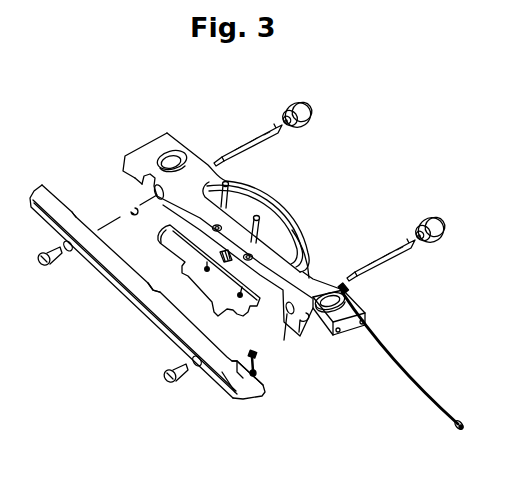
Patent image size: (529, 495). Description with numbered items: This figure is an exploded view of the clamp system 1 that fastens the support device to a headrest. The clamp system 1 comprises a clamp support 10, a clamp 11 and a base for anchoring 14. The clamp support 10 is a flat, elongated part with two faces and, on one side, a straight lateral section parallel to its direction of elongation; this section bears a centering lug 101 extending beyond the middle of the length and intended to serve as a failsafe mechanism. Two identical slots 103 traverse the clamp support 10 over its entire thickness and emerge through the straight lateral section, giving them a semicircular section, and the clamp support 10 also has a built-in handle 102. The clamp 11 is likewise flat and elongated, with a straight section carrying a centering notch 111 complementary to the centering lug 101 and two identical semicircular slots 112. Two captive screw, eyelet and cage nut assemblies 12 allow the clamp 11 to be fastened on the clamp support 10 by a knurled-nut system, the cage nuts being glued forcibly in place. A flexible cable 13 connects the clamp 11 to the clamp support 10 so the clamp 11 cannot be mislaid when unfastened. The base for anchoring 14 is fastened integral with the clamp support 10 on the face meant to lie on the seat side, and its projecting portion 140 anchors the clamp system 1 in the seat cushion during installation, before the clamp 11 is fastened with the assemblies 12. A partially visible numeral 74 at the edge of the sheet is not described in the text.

The clamp system 1 is at (422, 86).
The clamp support 10 is at (305, 281).
The clamp 11 is at (227, 362).
The captive screw, eyelet and cage nut assemblies 12 is at (319, 104).
The flexible cable 13 is at (421, 395).
The base for anchoring 14 is at (283, 342).
The centering lug 101 is at (268, 243).
The built-in handle 102 is at (287, 240).
The slots 103 is at (137, 182).
The centering notch 111 is at (148, 282).
The slots 112 is at (75, 216).
The projecting portion 140 is at (198, 302).
The partially visible element 74 is at (521, 320).